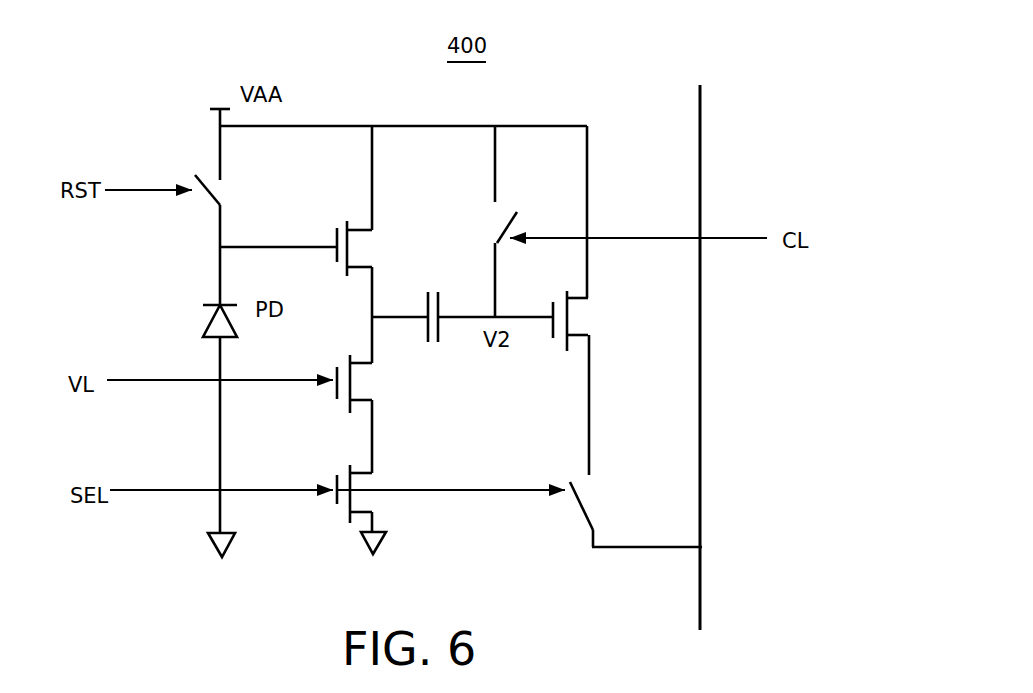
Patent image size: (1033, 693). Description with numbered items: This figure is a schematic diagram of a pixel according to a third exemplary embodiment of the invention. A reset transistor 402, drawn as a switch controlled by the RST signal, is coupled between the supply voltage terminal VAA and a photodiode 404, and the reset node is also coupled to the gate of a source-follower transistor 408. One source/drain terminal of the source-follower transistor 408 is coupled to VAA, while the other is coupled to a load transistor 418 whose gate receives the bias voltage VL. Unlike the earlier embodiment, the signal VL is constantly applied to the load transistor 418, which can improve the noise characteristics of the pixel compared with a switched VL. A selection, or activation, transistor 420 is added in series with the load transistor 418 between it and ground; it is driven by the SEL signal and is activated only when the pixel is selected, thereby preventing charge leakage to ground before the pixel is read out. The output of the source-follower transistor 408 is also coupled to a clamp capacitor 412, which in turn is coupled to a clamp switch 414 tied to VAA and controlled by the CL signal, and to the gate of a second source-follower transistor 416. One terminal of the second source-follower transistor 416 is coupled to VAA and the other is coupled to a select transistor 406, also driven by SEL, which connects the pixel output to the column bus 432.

The reset transistor 402 is at (228, 188).
The photodiode 404 is at (207, 314).
The select transistor 406 is at (602, 488).
The source-follower transistor 408 is at (387, 228).
The clamp capacitor 412 is at (432, 290).
The clamp switch 414 is at (501, 212).
The second source-follower transistor 416 is at (603, 300).
The load transistor 418 is at (388, 403).
The selection transistor 420 is at (388, 514).
The column bus 432 is at (701, 185).